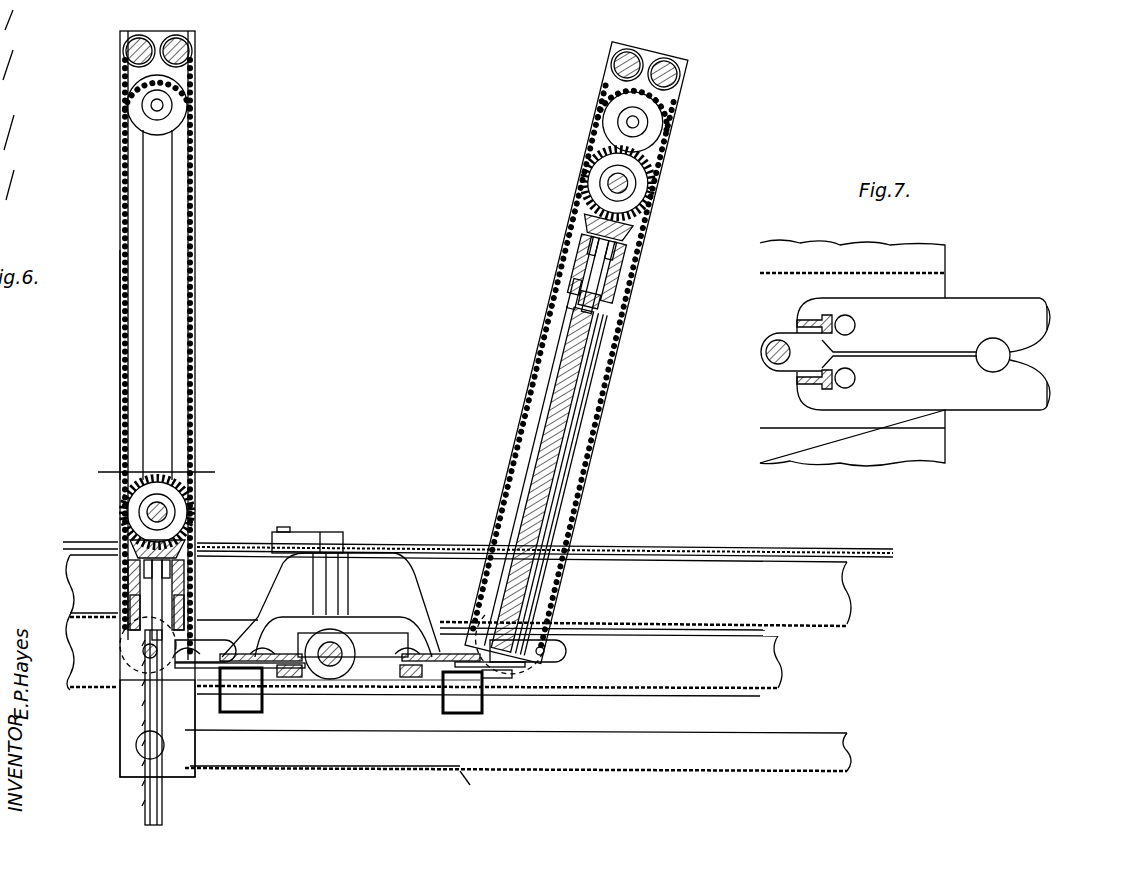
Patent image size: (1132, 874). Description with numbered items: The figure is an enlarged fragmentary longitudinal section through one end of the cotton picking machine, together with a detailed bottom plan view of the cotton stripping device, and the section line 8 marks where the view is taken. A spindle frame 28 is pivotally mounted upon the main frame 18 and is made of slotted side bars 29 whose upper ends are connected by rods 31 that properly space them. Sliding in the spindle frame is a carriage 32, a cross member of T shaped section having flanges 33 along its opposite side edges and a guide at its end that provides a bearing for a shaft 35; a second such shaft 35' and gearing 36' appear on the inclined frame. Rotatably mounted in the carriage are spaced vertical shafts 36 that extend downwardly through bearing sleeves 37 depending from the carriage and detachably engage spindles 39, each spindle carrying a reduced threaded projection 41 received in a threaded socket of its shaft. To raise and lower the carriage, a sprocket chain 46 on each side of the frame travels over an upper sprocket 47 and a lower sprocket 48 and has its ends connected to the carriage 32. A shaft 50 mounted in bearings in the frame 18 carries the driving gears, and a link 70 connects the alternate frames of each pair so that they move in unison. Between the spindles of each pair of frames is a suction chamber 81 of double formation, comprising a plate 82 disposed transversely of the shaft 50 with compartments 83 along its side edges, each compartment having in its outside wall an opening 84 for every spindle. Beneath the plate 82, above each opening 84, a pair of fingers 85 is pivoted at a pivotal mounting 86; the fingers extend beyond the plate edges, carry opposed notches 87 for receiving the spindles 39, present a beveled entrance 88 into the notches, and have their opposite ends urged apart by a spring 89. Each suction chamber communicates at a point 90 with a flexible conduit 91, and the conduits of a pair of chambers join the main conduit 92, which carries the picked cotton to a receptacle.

In FIG. 6, the section line 8 is at (156, 471).
In FIG. 6, the frame 18 is at (690, 690).
In FIG. 6, the spindle frame 28 is at (105, 323).
In FIG. 6, the slotted side bar 29 is at (178, 265).
In FIG. 6, the rod 31 is at (122, 50).
In FIG. 6, the carriage 32 is at (184, 590).
In FIG. 6, the flange 33 is at (142, 563).
In FIG. 6, the shaft 35 is at (392, 344).
In FIG. 6, the gear 35' is at (561, 150).
In FIG. 6, the vertical shaft 36 is at (341, 435).
In FIG. 6, the bevel pinion 36' is at (353, 365).
In FIG. 6, the bearing sleeve 37 is at (140, 610).
In FIG. 6, the spindle 39 is at (162, 805).
In FIG. 6, the reduced threaded projection 41 is at (620, 302).
In FIG. 6, the sprocket chain 46 is at (196, 203).
In FIG. 6, the upper sprocket 47 is at (178, 103).
In FIG. 6, the lower sprocket 48 is at (140, 652).
In FIG. 6, the shaft 50 is at (343, 655).
In FIG. 6, the link 70 is at (345, 778).
In FIG. 6, the suction chamber 81 is at (283, 680).
In FIG. 6, the plate 82 is at (385, 680).
In FIG. 7, the plate 82 is at (932, 290).
In FIG. 6, the compartment 83 is at (243, 700).
In FIG. 6, the opening 84 is at (482, 682).
In FIG. 6, the finger 85 is at (195, 670).
In FIG. 7, the finger 85 is at (922, 354).
In FIG. 7, the pivotal mounting 86 is at (850, 372).
In FIG. 7, the notch 87 is at (997, 338).
In FIG. 7, the beveled entrance 88 is at (1048, 340).
In FIG. 7, the spring 89 is at (768, 338).
In FIG. 6, the communication 90 is at (243, 615).
In FIG. 6, the flexible conduit 91 is at (334, 571).
In FIG. 6, the main conduit 92 is at (440, 548).